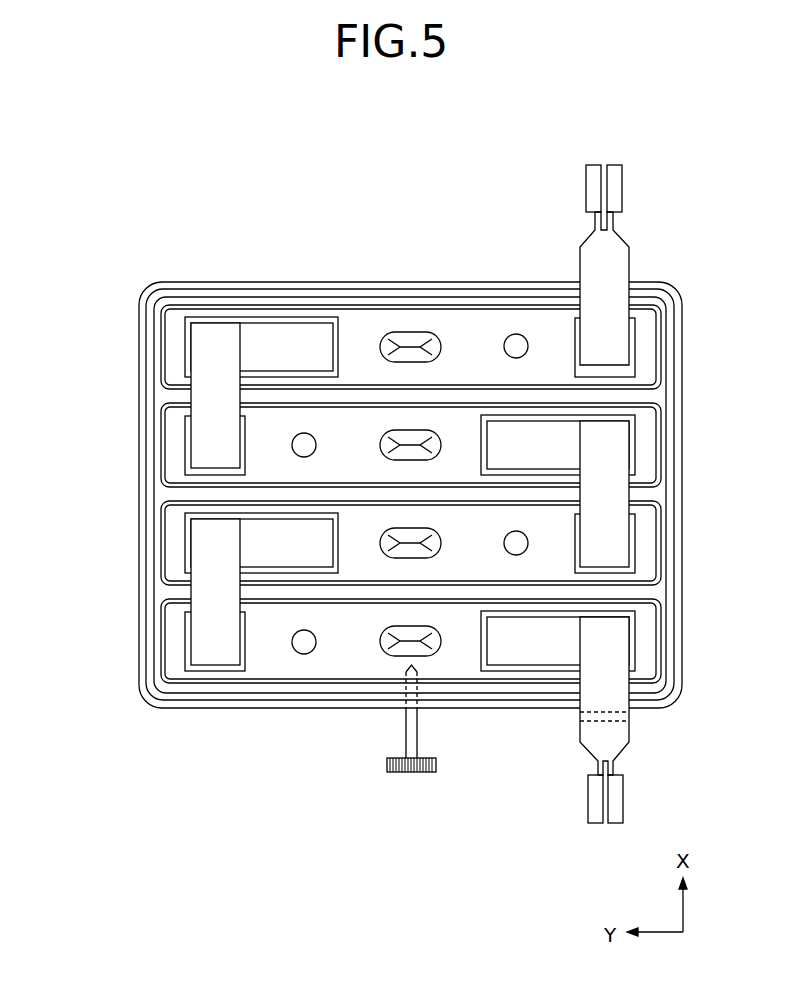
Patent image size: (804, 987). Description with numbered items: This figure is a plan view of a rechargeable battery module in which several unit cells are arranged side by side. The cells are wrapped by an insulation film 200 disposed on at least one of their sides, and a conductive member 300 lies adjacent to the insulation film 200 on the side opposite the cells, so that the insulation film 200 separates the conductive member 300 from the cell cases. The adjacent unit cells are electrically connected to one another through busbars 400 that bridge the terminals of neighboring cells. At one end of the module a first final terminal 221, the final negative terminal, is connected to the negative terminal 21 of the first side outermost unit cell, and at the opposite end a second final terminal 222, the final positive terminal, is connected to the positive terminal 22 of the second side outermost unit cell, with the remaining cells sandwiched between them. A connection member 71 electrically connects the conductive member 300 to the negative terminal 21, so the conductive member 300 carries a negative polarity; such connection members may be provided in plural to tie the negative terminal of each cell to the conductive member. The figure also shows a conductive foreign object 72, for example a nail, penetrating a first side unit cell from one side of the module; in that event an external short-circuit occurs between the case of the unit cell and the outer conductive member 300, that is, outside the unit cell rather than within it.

The insulation film 200 is at (668, 332).
The conductive member 300 is at (678, 372).
The busbar 400 is at (203, 359).
The negative terminal 21 is at (180, 546).
The positive terminal 22 is at (641, 542).
The first final terminal 221 is at (621, 734).
The second final terminal 222 is at (620, 259).
The connection member 71 is at (603, 721).
The conductive foreign object 72 is at (400, 773).